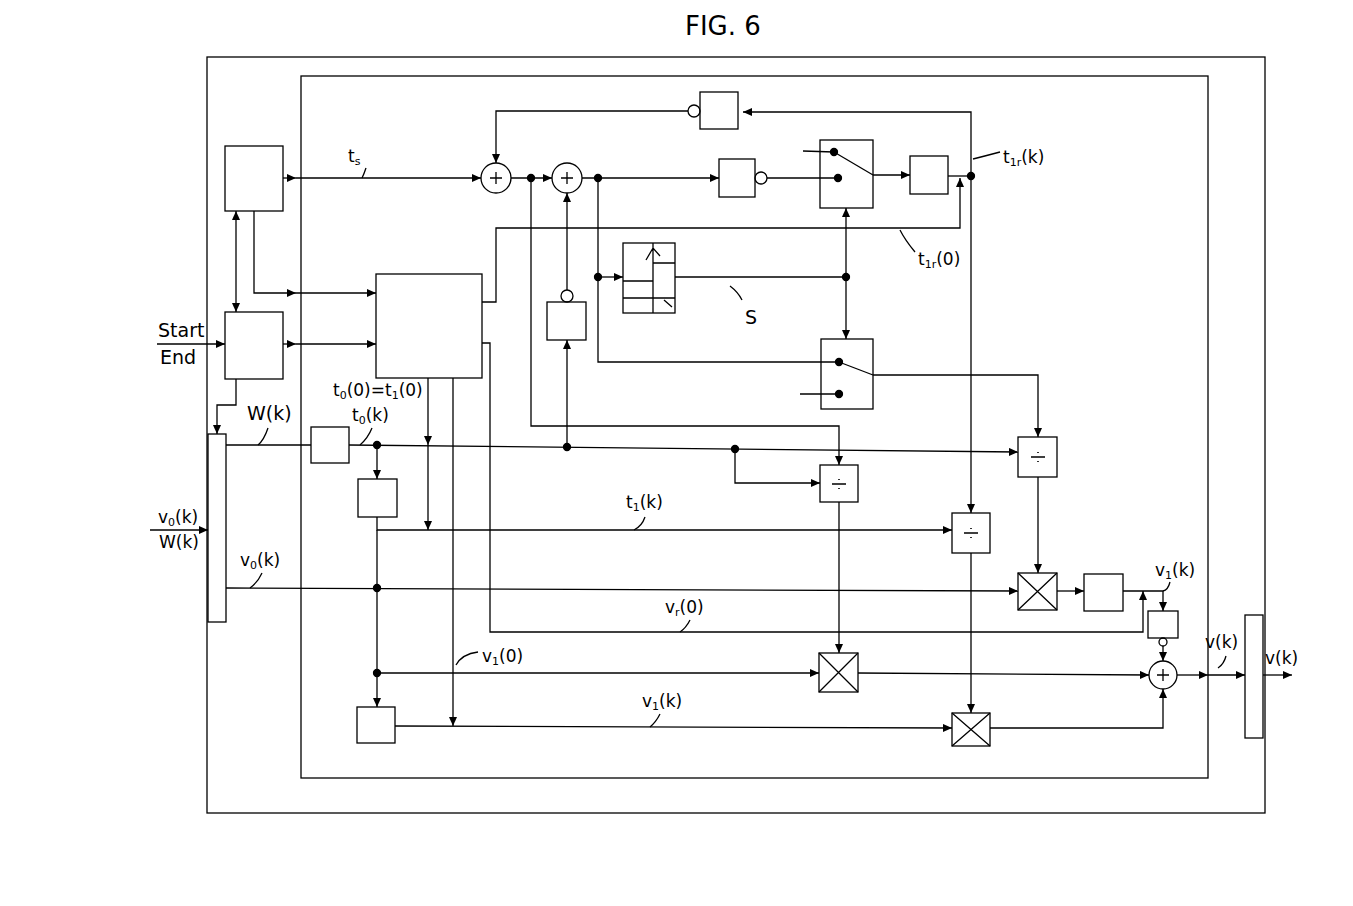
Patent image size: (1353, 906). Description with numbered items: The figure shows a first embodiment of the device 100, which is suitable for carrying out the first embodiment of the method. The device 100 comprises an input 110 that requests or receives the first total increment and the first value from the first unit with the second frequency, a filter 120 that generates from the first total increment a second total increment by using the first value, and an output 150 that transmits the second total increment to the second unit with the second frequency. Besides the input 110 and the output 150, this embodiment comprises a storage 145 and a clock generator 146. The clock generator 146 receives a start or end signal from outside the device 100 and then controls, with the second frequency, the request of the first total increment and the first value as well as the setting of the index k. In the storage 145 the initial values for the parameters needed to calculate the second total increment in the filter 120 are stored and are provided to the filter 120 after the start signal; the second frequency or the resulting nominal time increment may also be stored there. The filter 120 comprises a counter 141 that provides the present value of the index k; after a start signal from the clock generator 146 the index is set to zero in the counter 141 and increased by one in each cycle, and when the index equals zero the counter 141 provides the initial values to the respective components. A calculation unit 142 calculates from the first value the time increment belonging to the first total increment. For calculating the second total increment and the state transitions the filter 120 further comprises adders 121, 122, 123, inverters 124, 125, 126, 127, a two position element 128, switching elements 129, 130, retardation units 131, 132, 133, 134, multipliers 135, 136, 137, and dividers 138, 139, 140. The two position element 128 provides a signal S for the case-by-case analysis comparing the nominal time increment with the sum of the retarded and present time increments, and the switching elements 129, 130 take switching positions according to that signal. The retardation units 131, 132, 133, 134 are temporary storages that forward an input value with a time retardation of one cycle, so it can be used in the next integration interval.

The device 100 is at (1312, 120).
The input 110 is at (218, 622).
The filter 120 is at (1208, 156).
The adder 121 is at (492, 193).
The adder 122 is at (571, 163).
The adder 123 is at (1172, 689).
The inverter 124 is at (744, 106).
The inverter 125 is at (547, 318).
The inverter 126 is at (736, 162).
The inverter 127 is at (1178, 626).
The two position element 128 is at (668, 243).
The switching element 129 is at (873, 196).
The switching element 130 is at (873, 353).
The retardation unit 131 is at (934, 148).
The retardation unit 132 is at (358, 507).
The retardation unit 133 is at (380, 743).
The retardation unit 134 is at (1100, 574).
The multiplier 135 is at (858, 670).
The multiplier 136 is at (990, 722).
The multiplier 137 is at (1045, 573).
The divider 138 is at (858, 496).
The divider 139 is at (990, 541).
The divider 140 is at (1057, 460).
The counter 141 is at (390, 274).
The calculation unit 142 is at (311, 460).
The storage 145 is at (250, 146).
The clock generator 146 is at (256, 297).
The output 150 is at (1254, 740).